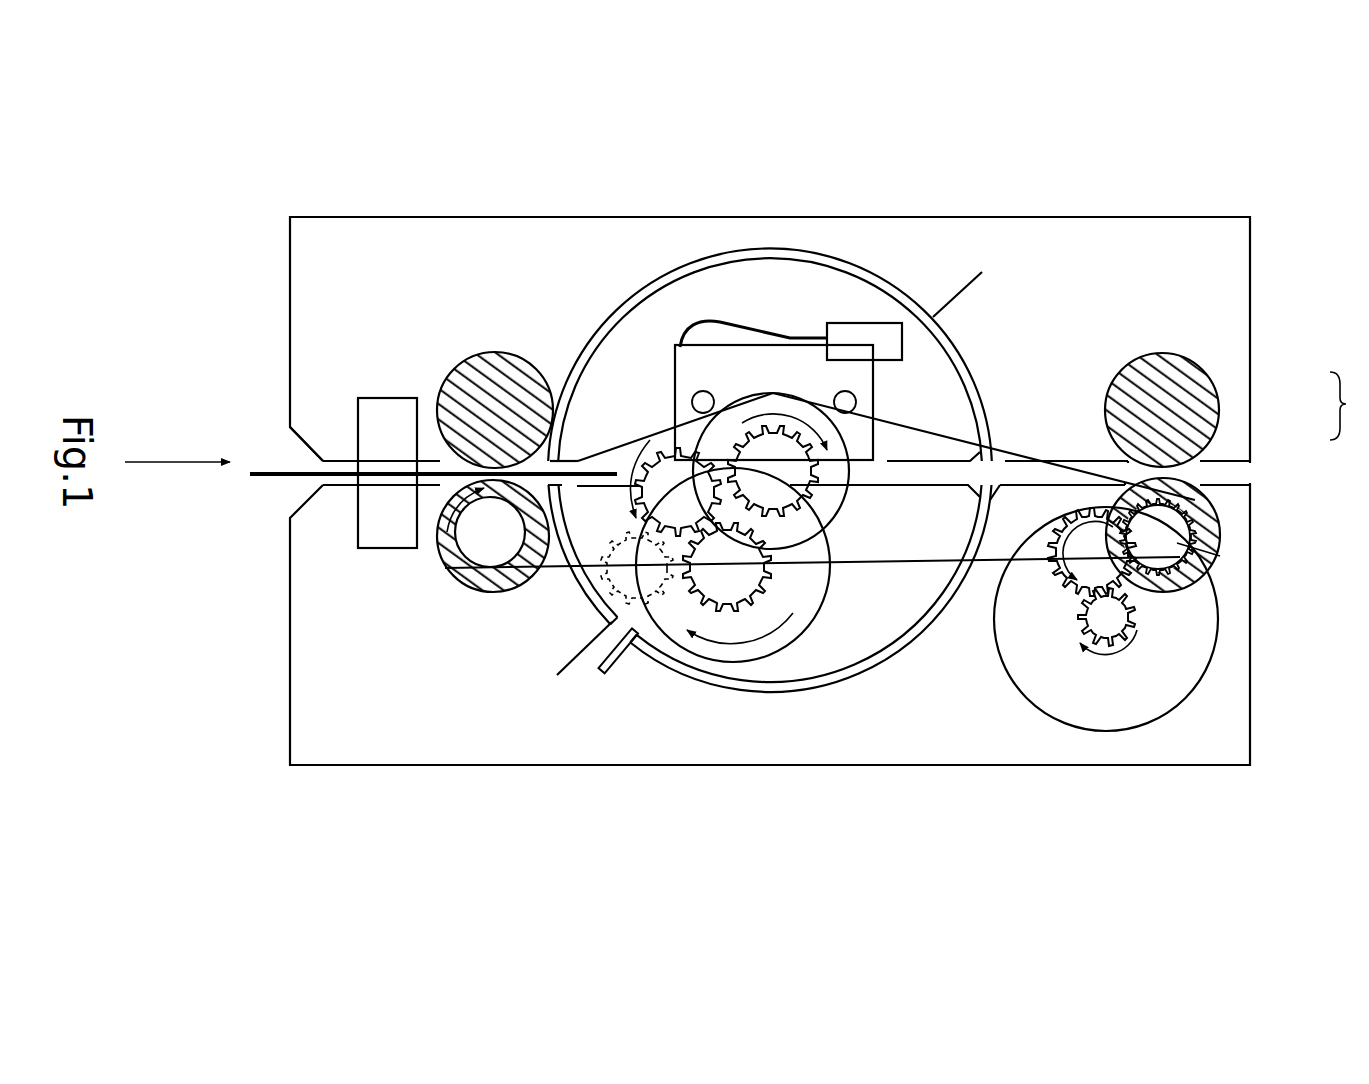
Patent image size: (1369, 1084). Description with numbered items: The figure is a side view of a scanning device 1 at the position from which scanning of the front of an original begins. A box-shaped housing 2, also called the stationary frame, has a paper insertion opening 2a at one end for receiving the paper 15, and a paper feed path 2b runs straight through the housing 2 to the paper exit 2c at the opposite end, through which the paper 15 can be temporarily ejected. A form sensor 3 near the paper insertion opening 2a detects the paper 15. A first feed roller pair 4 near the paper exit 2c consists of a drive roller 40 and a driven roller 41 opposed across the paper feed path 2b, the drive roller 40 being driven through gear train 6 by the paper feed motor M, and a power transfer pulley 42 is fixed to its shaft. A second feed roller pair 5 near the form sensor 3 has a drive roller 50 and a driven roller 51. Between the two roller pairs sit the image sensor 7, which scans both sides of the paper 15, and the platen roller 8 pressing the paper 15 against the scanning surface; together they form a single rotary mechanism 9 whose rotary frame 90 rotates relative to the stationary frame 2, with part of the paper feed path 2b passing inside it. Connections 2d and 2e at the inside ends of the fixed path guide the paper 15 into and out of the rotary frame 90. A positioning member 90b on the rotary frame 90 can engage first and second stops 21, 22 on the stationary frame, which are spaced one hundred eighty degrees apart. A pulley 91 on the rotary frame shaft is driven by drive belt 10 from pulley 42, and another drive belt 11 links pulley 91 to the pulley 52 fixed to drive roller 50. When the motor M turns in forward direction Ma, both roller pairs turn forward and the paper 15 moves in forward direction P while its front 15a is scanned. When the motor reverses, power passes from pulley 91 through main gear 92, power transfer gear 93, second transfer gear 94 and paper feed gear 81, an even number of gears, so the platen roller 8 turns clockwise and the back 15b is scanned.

The scanning device 1 is at (242, 192).
The housing 2 is at (1250, 718).
The paper insertion opening 2a is at (300, 453).
The paper feed path 2b is at (1093, 465).
The paper exit 2c is at (1258, 474).
The connection 2d is at (553, 455).
The connection 2e is at (992, 463).
The form sensor 3 is at (378, 398).
The first feed roller pair 4 is at (1348, 406).
The second feed roller pair 5 is at (467, 605).
The gear train 6 is at (1153, 613).
The image sensor 7 is at (873, 375).
The platen roller 8 is at (770, 657).
The rotary mechanism 9 is at (810, 670).
The drive belt 10 is at (1003, 462).
The drive belt 11 is at (620, 462).
The paper 15 is at (290, 485).
The front 15a is at (267, 471).
The back 15b is at (258, 485).
The first stop 21 is at (560, 678).
The second stop 22 is at (965, 282).
The drive roller 40 is at (1223, 517).
The driven roller 41 is at (1218, 397).
The power transfer pulley 42 is at (1210, 545).
The drive roller 50 is at (510, 590).
The driven roller 51 is at (493, 352).
The pulley 52 is at (447, 568).
The paper feed gear 81 is at (775, 590).
The rotary frame 90 is at (870, 633).
The positioning member 90b is at (610, 662).
The pulley 91 is at (827, 527).
The main gear 92 is at (807, 487).
The power transfer gear 93 is at (660, 458).
The second transfer gear 94 is at (600, 597).
The paper feed motor M is at (1167, 713).
The forward direction Ma is at (1105, 650).
The forward direction P is at (177, 444).